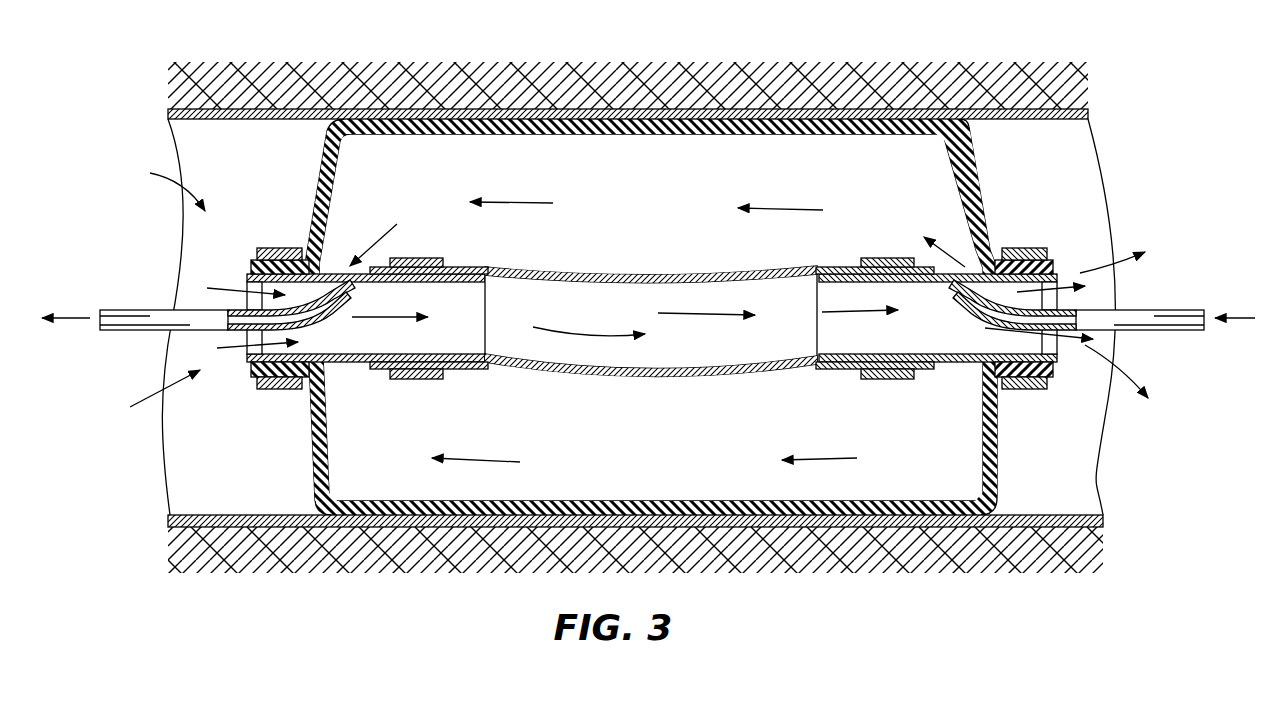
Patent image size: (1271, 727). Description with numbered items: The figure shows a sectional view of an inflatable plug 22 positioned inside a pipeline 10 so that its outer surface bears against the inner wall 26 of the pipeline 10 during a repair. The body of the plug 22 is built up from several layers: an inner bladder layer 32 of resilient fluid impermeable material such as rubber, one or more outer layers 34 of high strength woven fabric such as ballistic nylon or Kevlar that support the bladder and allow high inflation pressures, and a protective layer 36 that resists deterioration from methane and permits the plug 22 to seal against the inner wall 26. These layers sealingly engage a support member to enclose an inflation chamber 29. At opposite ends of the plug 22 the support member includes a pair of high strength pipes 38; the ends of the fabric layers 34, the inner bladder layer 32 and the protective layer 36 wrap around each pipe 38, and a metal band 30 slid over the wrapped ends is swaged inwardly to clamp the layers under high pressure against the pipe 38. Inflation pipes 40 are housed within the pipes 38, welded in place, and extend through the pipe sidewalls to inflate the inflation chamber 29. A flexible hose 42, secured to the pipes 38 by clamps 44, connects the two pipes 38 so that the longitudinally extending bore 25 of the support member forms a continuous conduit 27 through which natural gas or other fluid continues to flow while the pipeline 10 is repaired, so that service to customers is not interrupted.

The pipeline 10 is at (1003, 119).
The inflatable plug 22 is at (288, 469).
The longitudinally extending bore 25 is at (582, 267).
The inner wall 26 is at (293, 128).
The continuous conduit 27 is at (683, 356).
The inflation chamber 29 is at (855, 486).
The metal band 30 is at (300, 249).
The inner bladder layer 32 is at (427, 500).
The outer layer 34 is at (968, 183).
The protective layer 36 is at (992, 228).
The high strength pipe 38 is at (341, 363).
The inflation pipe 40 is at (308, 317).
The flexible hose 42 is at (652, 268).
The clamp 44 is at (418, 259).